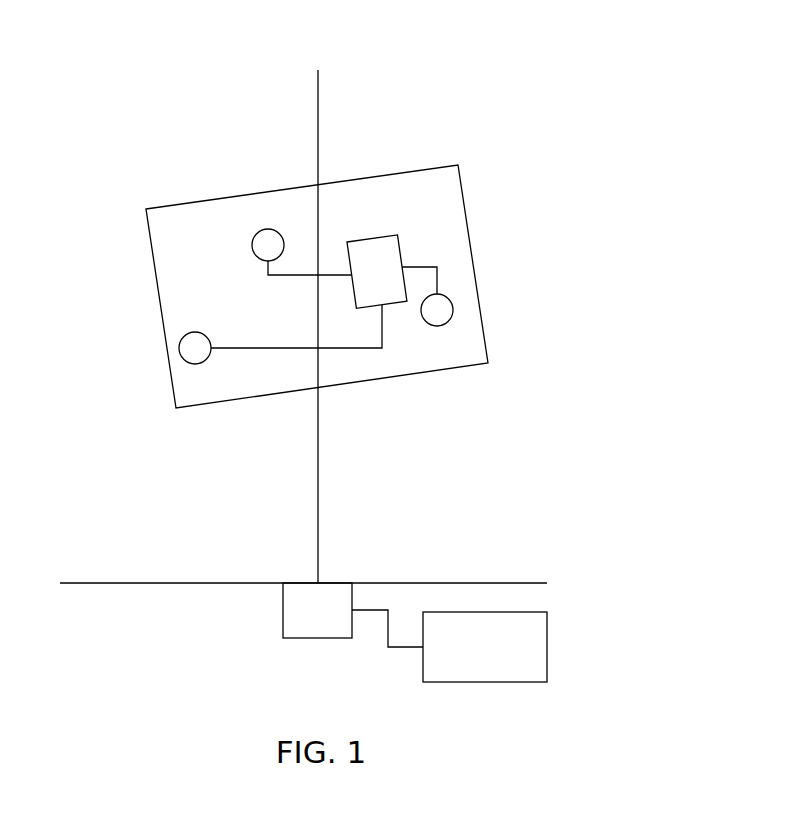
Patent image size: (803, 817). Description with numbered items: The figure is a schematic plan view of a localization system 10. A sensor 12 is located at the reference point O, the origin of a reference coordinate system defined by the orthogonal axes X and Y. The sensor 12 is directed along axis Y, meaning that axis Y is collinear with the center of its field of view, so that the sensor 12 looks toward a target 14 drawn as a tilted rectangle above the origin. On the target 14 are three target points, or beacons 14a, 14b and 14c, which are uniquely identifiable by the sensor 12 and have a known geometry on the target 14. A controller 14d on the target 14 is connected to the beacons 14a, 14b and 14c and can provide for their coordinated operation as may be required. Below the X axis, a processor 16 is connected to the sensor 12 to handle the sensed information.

The localization system 10 is at (566, 83).
The sensor 12 is at (283, 610).
The target 14 is at (155, 273).
The beacon 14a is at (450, 300).
The beacon 14b is at (179, 347).
The beacon 14c is at (264, 230).
The controller 14d is at (373, 238).
The processor 16 is at (547, 647).